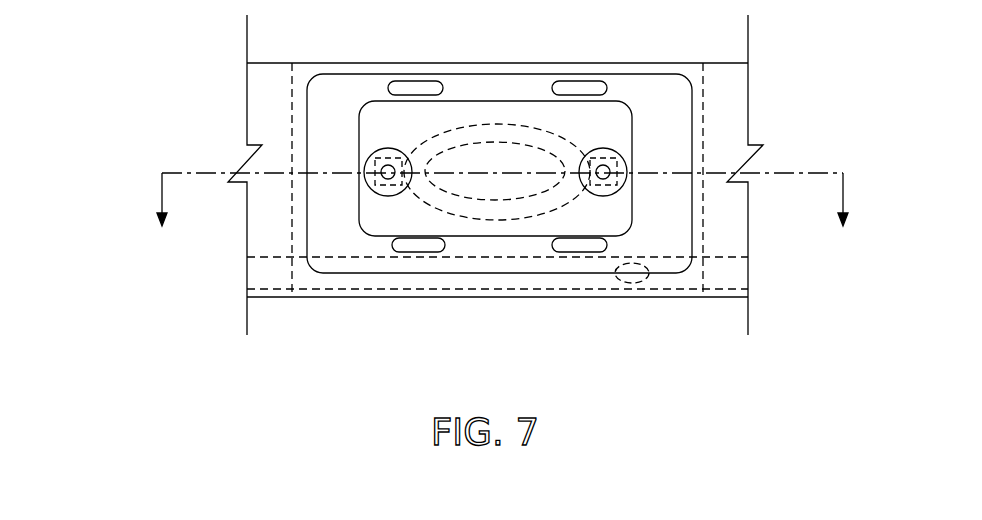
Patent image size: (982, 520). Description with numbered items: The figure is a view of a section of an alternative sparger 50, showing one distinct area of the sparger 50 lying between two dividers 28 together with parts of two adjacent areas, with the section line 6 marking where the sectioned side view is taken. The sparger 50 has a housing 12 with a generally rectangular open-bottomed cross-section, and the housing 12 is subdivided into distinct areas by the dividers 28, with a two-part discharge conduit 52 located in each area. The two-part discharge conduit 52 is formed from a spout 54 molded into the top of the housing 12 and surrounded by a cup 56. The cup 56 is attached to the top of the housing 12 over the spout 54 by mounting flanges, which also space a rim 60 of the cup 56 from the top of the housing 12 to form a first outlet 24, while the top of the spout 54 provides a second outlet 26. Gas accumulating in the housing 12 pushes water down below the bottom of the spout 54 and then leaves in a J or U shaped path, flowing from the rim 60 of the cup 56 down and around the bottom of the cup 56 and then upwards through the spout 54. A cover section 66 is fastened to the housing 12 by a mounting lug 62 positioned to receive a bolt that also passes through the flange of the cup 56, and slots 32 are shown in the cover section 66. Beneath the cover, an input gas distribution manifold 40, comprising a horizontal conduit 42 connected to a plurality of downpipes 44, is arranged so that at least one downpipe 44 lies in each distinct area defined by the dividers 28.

The section line 6- 6 is at (502, 213).
The housing 12 is at (650, 63).
The first outlet 24 is at (475, 210).
The second outlet 26 is at (452, 160).
The divider 28 is at (292, 82).
The slot 32 is at (412, 81).
The input gas distribution manifold 40 is at (550, 273).
The horizontal conduit 42 is at (727, 269).
The downpipe 44 is at (643, 283).
The sparger 50 is at (207, 345).
The two-part discharge conduit 52 is at (497, 171).
The spout 54 is at (497, 200).
The cup 56 is at (500, 124).
The rim 60 is at (525, 218).
The mounting lug 62 is at (397, 162).
The cover section 66 is at (673, 118).